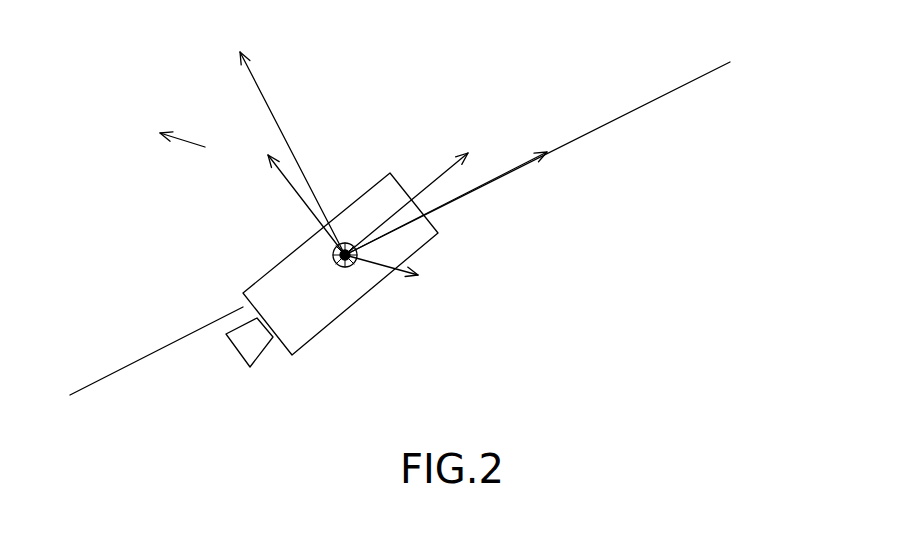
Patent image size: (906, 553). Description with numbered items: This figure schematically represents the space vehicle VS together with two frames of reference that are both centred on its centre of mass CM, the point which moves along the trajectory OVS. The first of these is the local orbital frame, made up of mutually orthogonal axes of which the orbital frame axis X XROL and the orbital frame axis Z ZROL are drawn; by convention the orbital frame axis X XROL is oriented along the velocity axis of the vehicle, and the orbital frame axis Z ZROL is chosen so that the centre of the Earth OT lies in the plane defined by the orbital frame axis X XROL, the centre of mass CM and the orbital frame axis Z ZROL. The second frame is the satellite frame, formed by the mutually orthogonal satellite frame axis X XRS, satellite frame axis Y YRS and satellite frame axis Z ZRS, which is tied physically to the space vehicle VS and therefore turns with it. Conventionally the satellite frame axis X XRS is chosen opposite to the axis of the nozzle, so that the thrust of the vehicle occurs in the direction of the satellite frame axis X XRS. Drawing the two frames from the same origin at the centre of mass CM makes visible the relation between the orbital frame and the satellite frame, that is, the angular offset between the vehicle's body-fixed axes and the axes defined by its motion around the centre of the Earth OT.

The space vehicle VS is at (305, 347).
The centre of mass CM is at (345, 267).
The trajectory OVS is at (680, 87).
The orbital frame axis X XROL is at (477, 203).
The orbital frame axis Z ZROL is at (274, 135).
The satellite frame axis X XRS is at (438, 175).
The satellite frame axis Y YRS is at (282, 183).
The satellite frame axis Z ZRS is at (406, 277).
The centre of the Earth OT is at (161, 126).